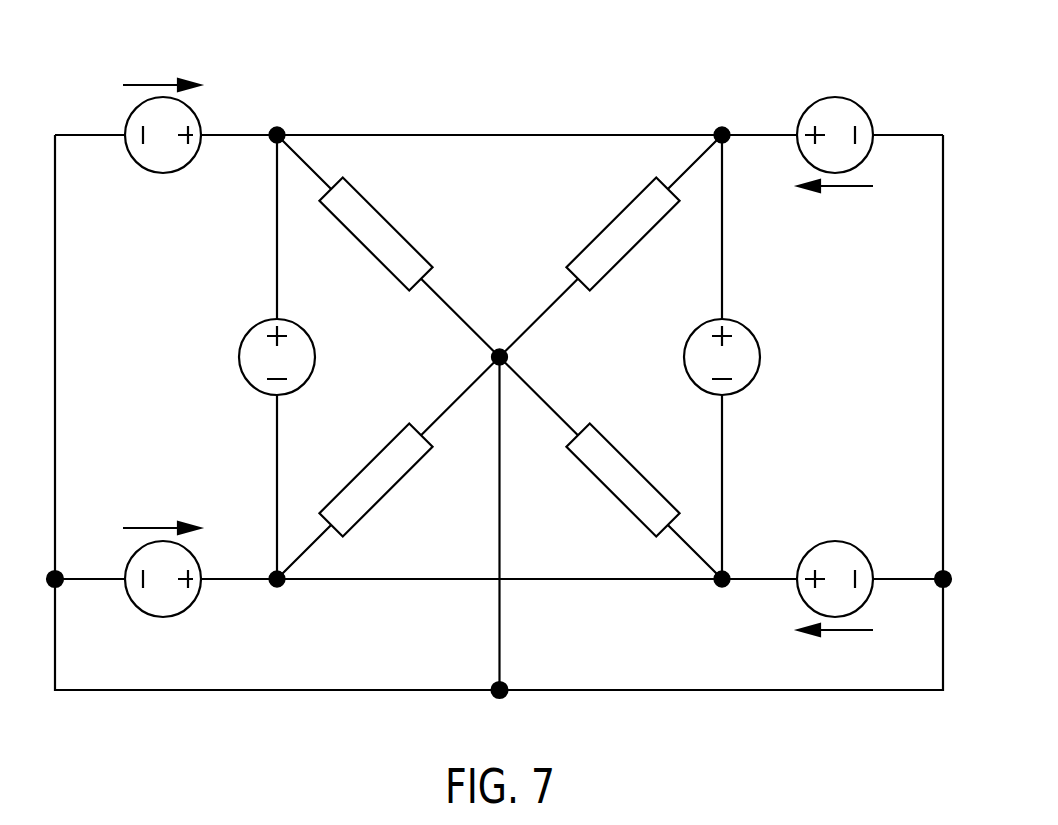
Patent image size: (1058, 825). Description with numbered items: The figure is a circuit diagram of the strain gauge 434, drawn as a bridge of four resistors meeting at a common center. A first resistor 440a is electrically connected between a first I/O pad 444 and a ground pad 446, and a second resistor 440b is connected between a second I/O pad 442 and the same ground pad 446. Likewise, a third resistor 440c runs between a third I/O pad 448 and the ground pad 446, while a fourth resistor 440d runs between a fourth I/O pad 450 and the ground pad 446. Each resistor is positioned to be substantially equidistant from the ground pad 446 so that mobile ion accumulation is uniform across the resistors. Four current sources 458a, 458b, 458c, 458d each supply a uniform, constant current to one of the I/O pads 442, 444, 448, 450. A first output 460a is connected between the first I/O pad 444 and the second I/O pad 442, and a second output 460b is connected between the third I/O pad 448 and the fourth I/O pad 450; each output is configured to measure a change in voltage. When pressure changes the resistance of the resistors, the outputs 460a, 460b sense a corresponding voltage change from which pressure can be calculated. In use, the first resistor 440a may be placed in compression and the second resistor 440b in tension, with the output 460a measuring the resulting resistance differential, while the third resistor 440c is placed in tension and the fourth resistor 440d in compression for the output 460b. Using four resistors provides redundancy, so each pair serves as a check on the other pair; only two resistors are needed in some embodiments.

The strain gauge 434 is at (556, 76).
The first resistor 440a is at (397, 485).
The second resistor 440b is at (393, 223).
The third resistor 440c is at (598, 232).
The fourth resistor 440d is at (602, 487).
The second I/O pad 442 is at (278, 128).
The first I/O pad 444 is at (278, 586).
The ground pad 446 is at (500, 345).
The third I/O pad 448 is at (722, 128).
The fourth I/O pad 450 is at (722, 586).
The current source 458a is at (163, 617).
The current source 458b is at (165, 98).
The current source 458c is at (835, 98).
The current source 458d is at (835, 617).
The first output 460a is at (240, 357).
The second output 460b is at (760, 357).